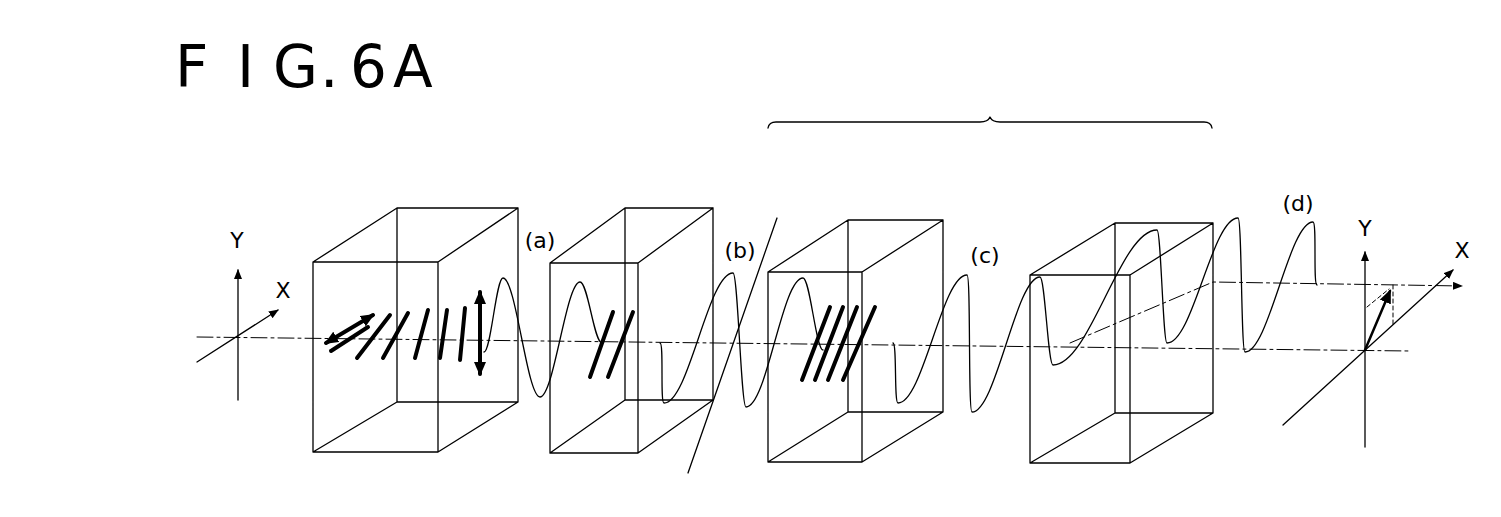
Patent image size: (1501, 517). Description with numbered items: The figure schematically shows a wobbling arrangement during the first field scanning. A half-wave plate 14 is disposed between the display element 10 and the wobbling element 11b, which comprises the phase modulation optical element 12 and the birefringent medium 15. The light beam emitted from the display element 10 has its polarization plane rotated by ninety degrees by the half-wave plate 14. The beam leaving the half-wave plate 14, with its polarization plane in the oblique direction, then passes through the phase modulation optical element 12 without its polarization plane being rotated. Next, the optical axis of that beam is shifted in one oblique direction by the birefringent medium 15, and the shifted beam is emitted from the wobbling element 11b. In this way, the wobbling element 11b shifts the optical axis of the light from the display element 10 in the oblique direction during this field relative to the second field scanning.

The display element 10 is at (360, 220).
The half-wave plate 14 is at (611, 205).
The phase modulation optical element 12 is at (823, 223).
The birefringent medium 15 is at (1085, 226).
The wobbling element 11b is at (990, 106).